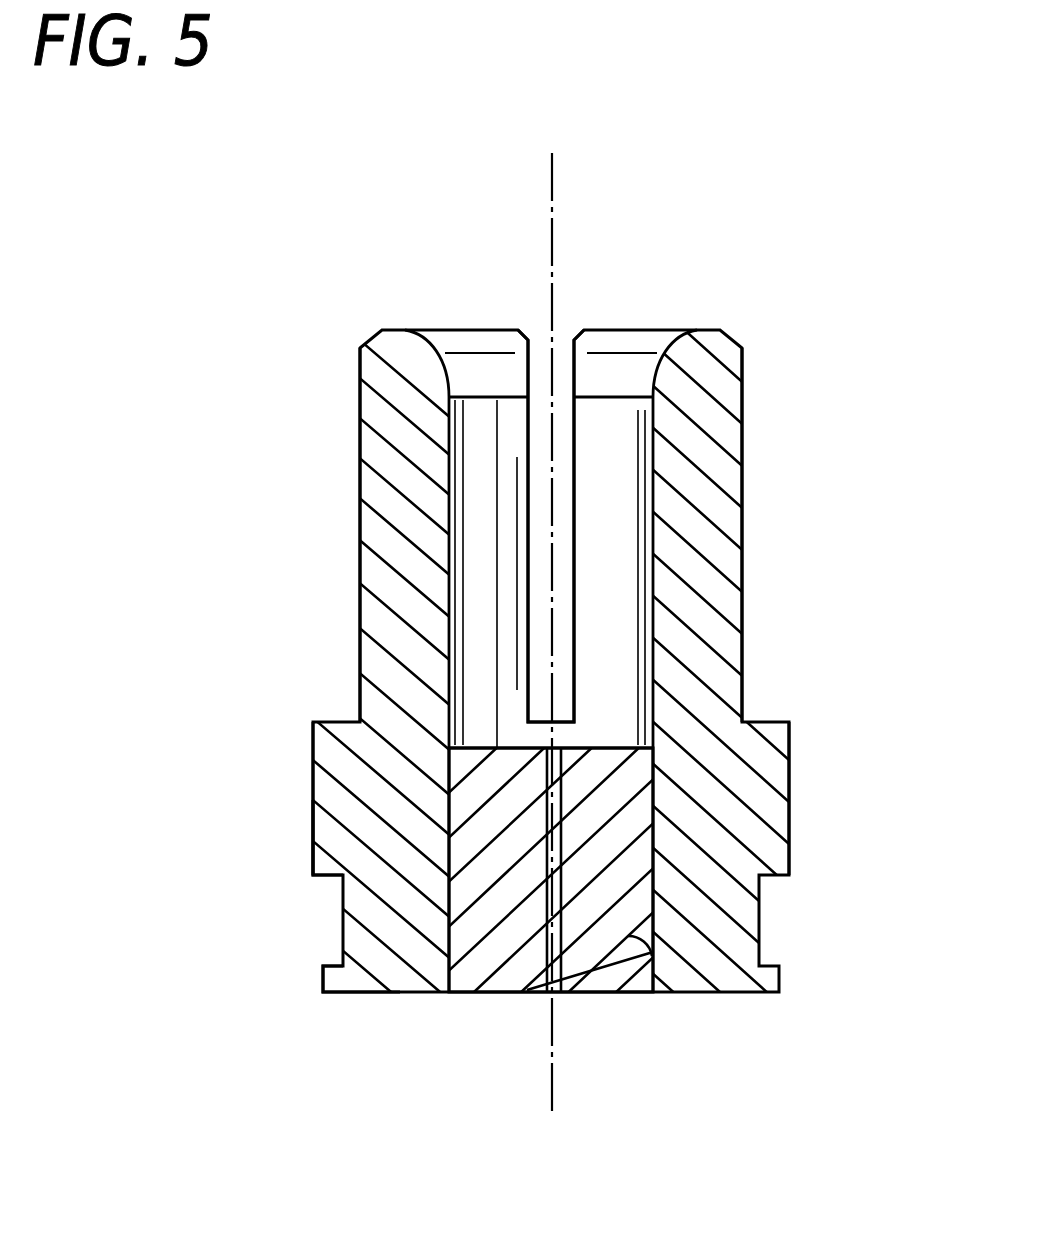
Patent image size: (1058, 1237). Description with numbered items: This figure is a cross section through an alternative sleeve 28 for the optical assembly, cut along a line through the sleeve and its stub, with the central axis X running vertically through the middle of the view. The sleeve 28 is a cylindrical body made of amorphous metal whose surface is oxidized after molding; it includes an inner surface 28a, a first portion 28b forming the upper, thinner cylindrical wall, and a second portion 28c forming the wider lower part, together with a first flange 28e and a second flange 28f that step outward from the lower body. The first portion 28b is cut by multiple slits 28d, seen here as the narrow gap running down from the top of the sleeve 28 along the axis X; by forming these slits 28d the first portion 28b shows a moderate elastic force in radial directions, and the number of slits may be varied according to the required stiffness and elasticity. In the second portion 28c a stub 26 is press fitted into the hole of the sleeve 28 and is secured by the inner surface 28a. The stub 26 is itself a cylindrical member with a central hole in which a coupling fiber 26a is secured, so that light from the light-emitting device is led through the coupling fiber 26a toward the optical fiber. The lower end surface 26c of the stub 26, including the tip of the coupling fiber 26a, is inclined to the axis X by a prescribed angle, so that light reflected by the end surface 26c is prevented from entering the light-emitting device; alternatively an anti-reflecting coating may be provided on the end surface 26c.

The axis X is at (552, 260).
The sleeve 28 is at (808, 313).
The inner surface 28a is at (623, 400).
The first portion 28b is at (763, 327).
The second portion 28c is at (805, 722).
The slits 28d is at (542, 372).
The first flange 28e is at (325, 983).
The second flange 28f is at (315, 852).
The stub 26 is at (678, 997).
The coupling fiber 26a is at (567, 960).
The end surface 26c is at (615, 967).